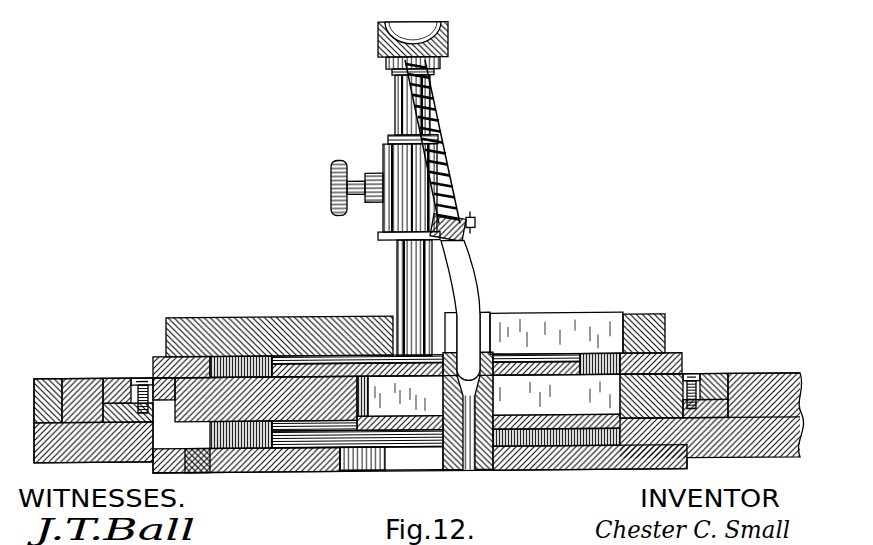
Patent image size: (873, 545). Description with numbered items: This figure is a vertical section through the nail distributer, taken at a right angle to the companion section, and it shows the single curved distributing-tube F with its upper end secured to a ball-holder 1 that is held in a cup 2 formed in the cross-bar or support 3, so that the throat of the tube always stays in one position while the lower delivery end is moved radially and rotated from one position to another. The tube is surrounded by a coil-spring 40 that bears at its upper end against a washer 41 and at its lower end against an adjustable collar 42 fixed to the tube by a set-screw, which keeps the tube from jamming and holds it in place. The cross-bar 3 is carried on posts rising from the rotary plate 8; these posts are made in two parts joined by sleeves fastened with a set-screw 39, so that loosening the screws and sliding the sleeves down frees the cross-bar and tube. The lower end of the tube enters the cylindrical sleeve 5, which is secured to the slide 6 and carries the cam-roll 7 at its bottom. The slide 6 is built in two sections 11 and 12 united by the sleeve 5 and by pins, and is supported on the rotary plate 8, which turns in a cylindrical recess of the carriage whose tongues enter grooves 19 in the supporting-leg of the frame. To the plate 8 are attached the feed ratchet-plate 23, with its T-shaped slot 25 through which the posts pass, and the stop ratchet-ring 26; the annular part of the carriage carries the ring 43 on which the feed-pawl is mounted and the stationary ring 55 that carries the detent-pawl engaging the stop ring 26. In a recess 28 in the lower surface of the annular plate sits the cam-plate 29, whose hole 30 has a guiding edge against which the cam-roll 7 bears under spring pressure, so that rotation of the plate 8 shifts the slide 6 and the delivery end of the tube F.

The ball-holder 1 is at (412, 28).
The cross-bar or support 3 is at (450, 42).
The cup 2 is at (381, 54).
The washer 41 is at (386, 64).
The coil-spring 40 is at (431, 117).
The distributing-tube F is at (444, 176).
The set-screw 39 is at (331, 191).
The adjustable collar 42 is at (475, 224).
The feed ratchet-plate 23 is at (218, 327).
The section of slide-block 11 is at (328, 356).
The T-shaped slot 25 is at (558, 355).
The stop ratchet-ring 26 is at (682, 344).
The stationary ring 55 is at (114, 377).
The ring 43 is at (753, 376).
The rotary plate 8 is at (353, 402).
The slide 6 is at (357, 390).
The cylindrical sleeve 5 is at (493, 389).
The grooves 19 is at (553, 397).
The hole 30 is at (391, 459).
The cam-plate 29 is at (241, 473).
The section of slide-block 12 is at (320, 434).
The cam-roll 7 is at (488, 473).
The recess 28 is at (650, 447).